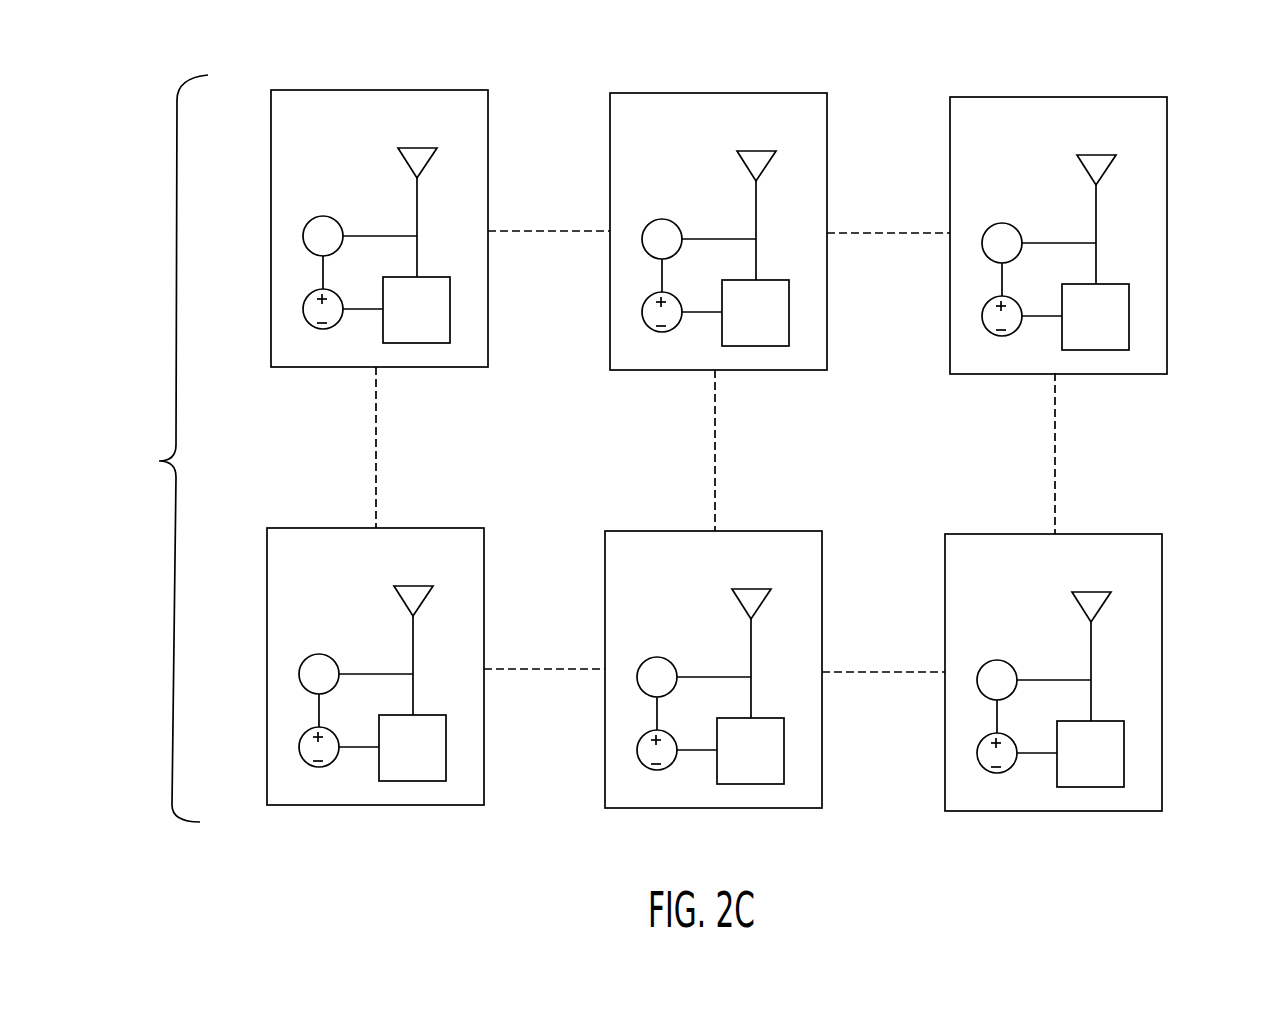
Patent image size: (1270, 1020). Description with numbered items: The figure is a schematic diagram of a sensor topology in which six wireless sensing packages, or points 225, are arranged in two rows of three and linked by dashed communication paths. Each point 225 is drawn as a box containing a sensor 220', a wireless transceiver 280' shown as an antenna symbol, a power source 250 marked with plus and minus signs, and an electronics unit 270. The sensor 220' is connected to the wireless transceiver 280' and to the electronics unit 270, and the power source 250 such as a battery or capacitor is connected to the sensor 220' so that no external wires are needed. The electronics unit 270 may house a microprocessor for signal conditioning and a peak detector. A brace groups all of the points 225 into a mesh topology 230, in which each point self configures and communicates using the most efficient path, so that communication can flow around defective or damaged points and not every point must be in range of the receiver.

The point 225 is at (737, 416).
The mesh topology 230 is at (160, 448).
The sensor 220' is at (689, 448).
The power source 250 is at (640, 513).
The electronics unit 270 is at (799, 544).
The wireless transceiver 280' is at (778, 412).